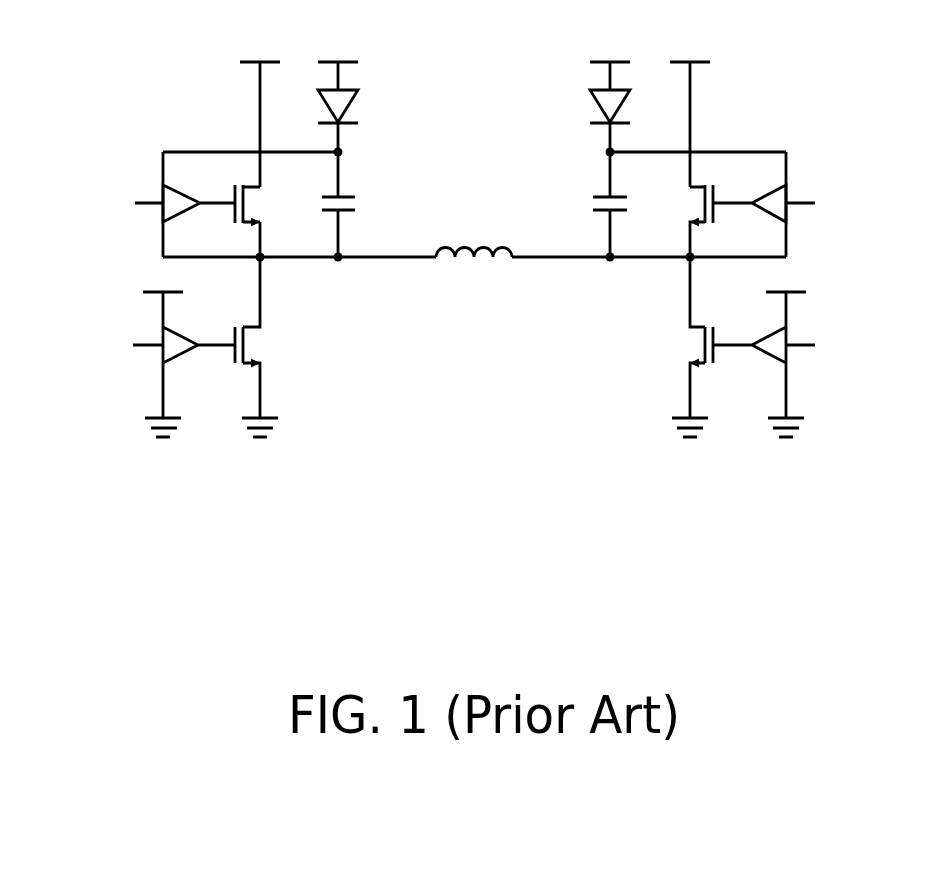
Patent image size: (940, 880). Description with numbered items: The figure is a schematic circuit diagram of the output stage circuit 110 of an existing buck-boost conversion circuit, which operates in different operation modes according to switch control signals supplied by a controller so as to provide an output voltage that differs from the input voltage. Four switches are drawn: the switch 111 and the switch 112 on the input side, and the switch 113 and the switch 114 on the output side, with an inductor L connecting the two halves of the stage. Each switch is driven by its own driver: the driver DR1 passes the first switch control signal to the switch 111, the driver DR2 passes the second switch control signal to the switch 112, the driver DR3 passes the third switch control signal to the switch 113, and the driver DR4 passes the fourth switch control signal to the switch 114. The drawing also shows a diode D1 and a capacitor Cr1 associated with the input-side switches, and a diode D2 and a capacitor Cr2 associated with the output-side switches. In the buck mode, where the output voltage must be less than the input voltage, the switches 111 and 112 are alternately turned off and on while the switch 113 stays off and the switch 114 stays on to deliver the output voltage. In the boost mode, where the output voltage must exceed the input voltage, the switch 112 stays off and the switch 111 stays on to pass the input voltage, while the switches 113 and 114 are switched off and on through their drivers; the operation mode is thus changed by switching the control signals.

The output stage circuit 110 is at (501, 316).
The switch 111 is at (264, 220).
The switch 112 is at (267, 347).
The switch 113 is at (680, 347).
The switch 114 is at (680, 220).
The driver DR1 is at (186, 187).
The driver DR2 is at (183, 358).
The driver DR3 is at (768, 358).
The driver DR4 is at (765, 188).
The first diode D1 is at (353, 103).
The second diode D2 is at (591, 104).
The first resonant capacitor Cr1 is at (361, 202).
The second resonant capacitor Cr2 is at (586, 202).
The inductor L is at (474, 234).